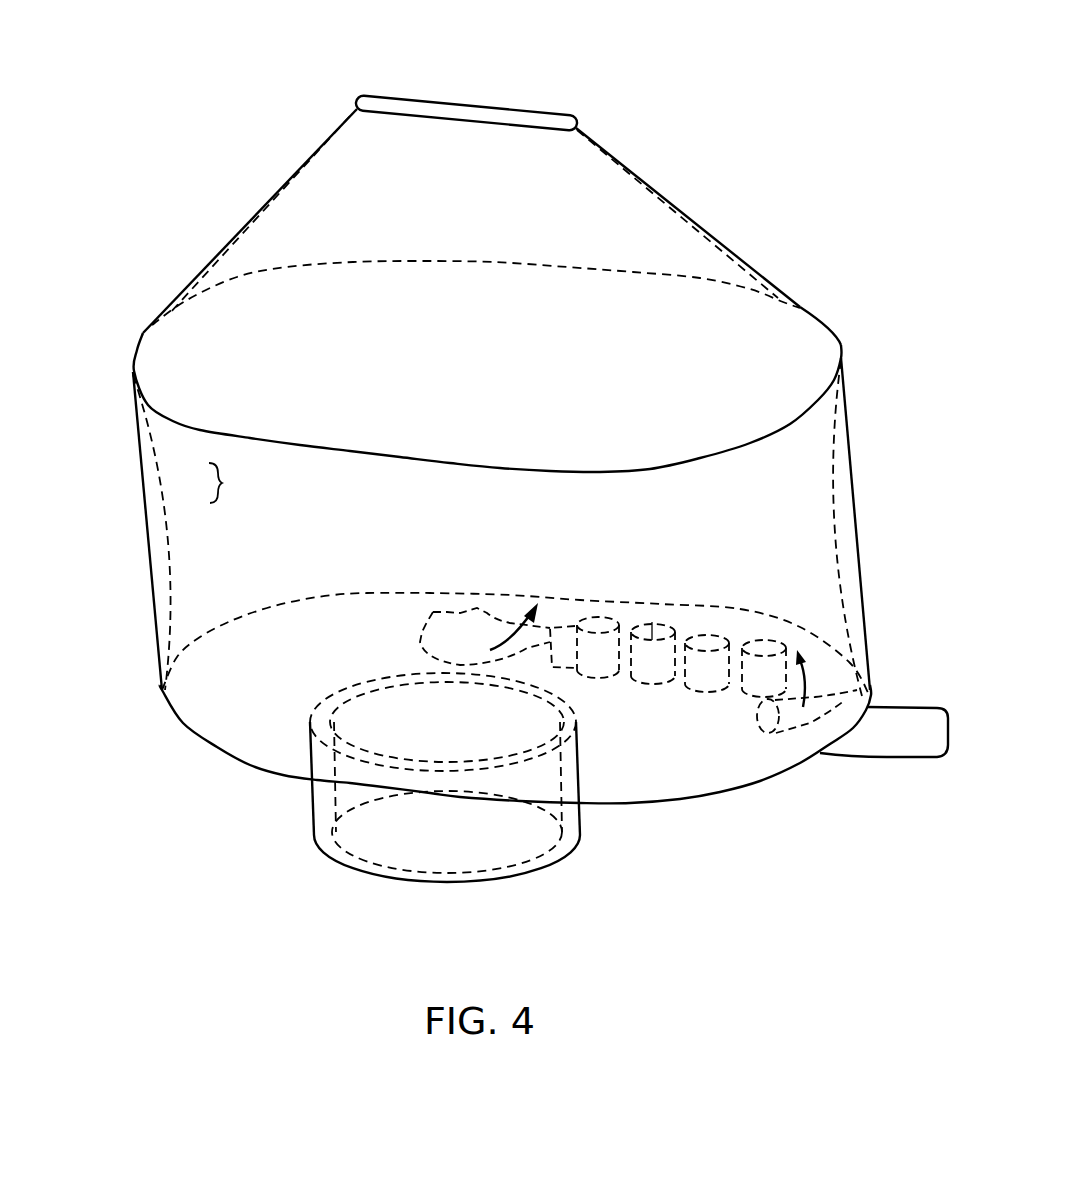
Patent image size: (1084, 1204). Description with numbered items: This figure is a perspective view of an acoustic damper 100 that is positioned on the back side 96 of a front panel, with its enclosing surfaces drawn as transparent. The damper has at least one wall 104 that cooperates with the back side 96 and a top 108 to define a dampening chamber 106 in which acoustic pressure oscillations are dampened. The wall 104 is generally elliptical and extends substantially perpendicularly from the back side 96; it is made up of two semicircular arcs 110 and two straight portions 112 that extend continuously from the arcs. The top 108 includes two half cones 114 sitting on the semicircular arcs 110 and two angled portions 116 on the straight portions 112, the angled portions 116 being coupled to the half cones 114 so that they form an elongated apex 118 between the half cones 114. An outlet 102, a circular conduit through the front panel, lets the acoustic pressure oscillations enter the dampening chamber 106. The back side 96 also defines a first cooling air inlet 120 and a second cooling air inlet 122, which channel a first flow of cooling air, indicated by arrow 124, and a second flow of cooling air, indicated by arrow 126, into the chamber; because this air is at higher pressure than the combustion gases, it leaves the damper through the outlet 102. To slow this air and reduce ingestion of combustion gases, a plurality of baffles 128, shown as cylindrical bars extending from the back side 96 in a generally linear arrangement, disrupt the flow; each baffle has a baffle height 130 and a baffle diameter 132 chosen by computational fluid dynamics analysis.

The acoustic damper 100 is at (152, 118).
The back side of front panel 96 is at (217, 717).
The outlet 102 is at (397, 735).
The wall 104 is at (207, 538).
The dampening chamber 106 is at (203, 483).
The top 108 is at (200, 355).
The semicircular arcs 110 is at (203, 395).
The straight portions 112 is at (480, 521).
The half cones 114 is at (327, 173).
The angled portions 116 is at (376, 210).
The elongated apex 118 is at (547, 120).
The first cooling air inlet 120 is at (783, 712).
The second cooling air inlet 122 is at (437, 641).
The arrow indicating first flow of cooling air 124 is at (808, 678).
The arrow indicating second flow of cooling air 126 is at (510, 642).
The baffles 128 is at (620, 670).
The baffle height 130 is at (553, 652).
The baffle diameter 132 is at (655, 632).